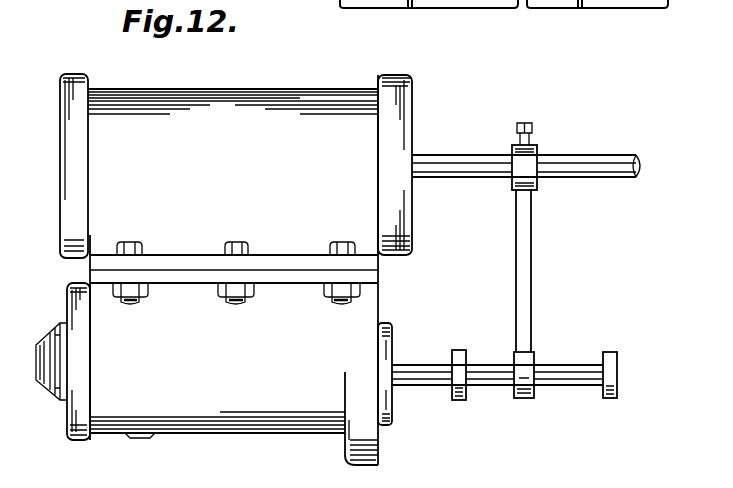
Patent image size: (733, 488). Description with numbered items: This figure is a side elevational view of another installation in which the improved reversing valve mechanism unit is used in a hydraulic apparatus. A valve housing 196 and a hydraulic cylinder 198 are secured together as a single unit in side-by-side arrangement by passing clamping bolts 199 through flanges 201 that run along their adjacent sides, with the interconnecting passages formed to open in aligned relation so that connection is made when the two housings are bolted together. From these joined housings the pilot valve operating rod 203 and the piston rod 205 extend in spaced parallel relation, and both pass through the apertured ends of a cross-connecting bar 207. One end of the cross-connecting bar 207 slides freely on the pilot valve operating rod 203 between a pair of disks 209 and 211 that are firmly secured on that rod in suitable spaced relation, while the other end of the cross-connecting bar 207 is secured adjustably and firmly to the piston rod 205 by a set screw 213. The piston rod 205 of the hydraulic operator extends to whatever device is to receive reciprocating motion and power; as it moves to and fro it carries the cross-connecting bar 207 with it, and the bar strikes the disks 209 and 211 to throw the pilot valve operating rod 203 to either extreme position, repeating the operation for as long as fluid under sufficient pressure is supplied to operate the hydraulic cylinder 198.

The valve housing 196 is at (198, 420).
The hydraulic cylinder 198 is at (238, 112).
The clamping bolts 199 is at (226, 246).
The flanges 201 is at (90, 274).
The pilot valve operating rod 203 is at (440, 385).
The piston rod 205 is at (620, 160).
The cross-connecting bar 207 is at (526, 272).
The disk 209 is at (525, 400).
The disk 211 is at (610, 400).
The set screw 213 is at (528, 124).